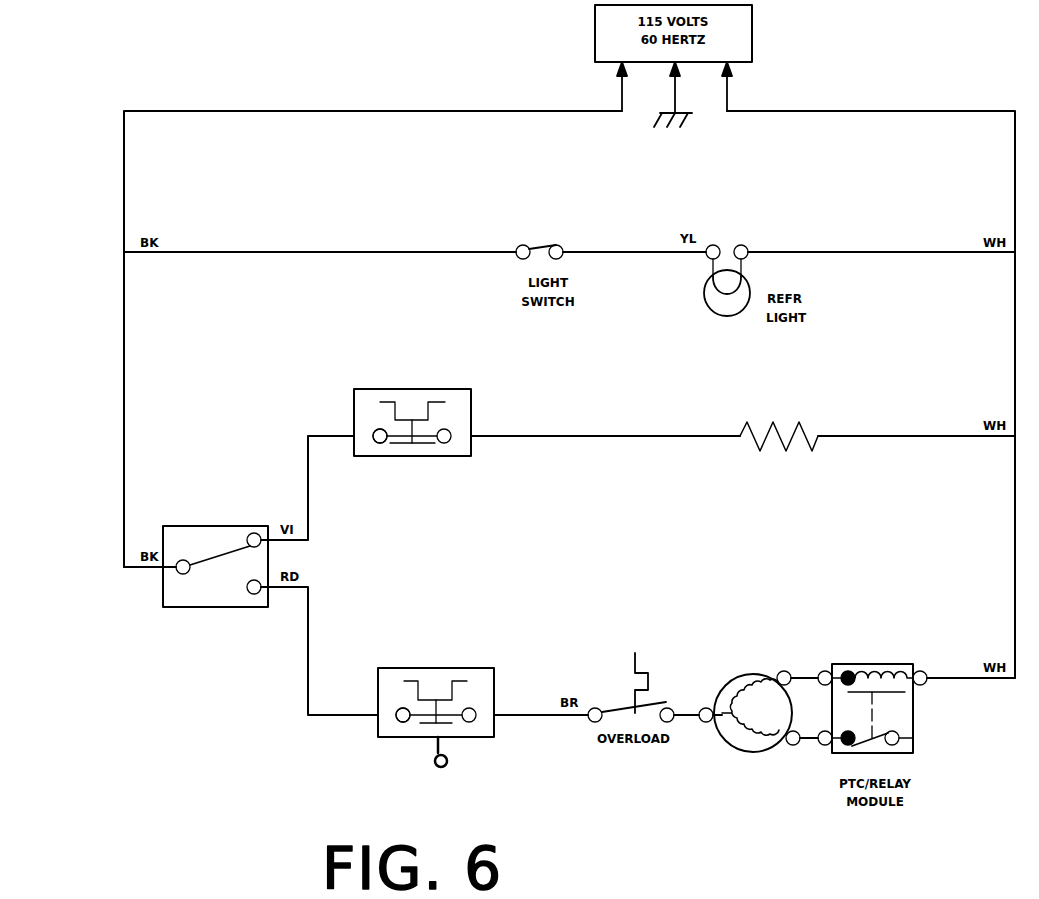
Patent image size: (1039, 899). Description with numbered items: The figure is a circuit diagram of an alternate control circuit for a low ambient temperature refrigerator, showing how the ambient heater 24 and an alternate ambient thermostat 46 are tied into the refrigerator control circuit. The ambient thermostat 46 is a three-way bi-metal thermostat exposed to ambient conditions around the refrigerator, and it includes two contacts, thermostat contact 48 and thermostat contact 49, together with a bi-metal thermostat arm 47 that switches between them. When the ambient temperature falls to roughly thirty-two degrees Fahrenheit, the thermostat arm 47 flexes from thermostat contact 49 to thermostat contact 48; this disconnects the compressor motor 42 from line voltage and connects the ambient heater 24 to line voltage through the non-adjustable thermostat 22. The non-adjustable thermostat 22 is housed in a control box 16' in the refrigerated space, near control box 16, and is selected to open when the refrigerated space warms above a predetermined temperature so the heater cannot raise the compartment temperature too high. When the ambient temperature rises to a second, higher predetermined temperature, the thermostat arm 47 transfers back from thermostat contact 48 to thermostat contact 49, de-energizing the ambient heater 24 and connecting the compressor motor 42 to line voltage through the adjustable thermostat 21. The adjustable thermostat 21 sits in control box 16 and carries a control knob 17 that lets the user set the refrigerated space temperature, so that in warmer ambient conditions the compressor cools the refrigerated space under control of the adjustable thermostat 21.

The control box 16 is at (476, 698).
The control box 16' is at (476, 411).
The control knob 17 is at (447, 758).
The adjustable thermostat 21 is at (424, 722).
The non-adjustable thermostat 22 is at (400, 456).
The ambient heater 24 is at (797, 424).
The compressor motor 42 is at (742, 670).
The ambient thermostat 46 is at (163, 587).
The bi-metal thermostat arm 47 is at (217, 558).
The thermostat contact 48 is at (254, 531).
The thermostat contact 49 is at (255, 593).